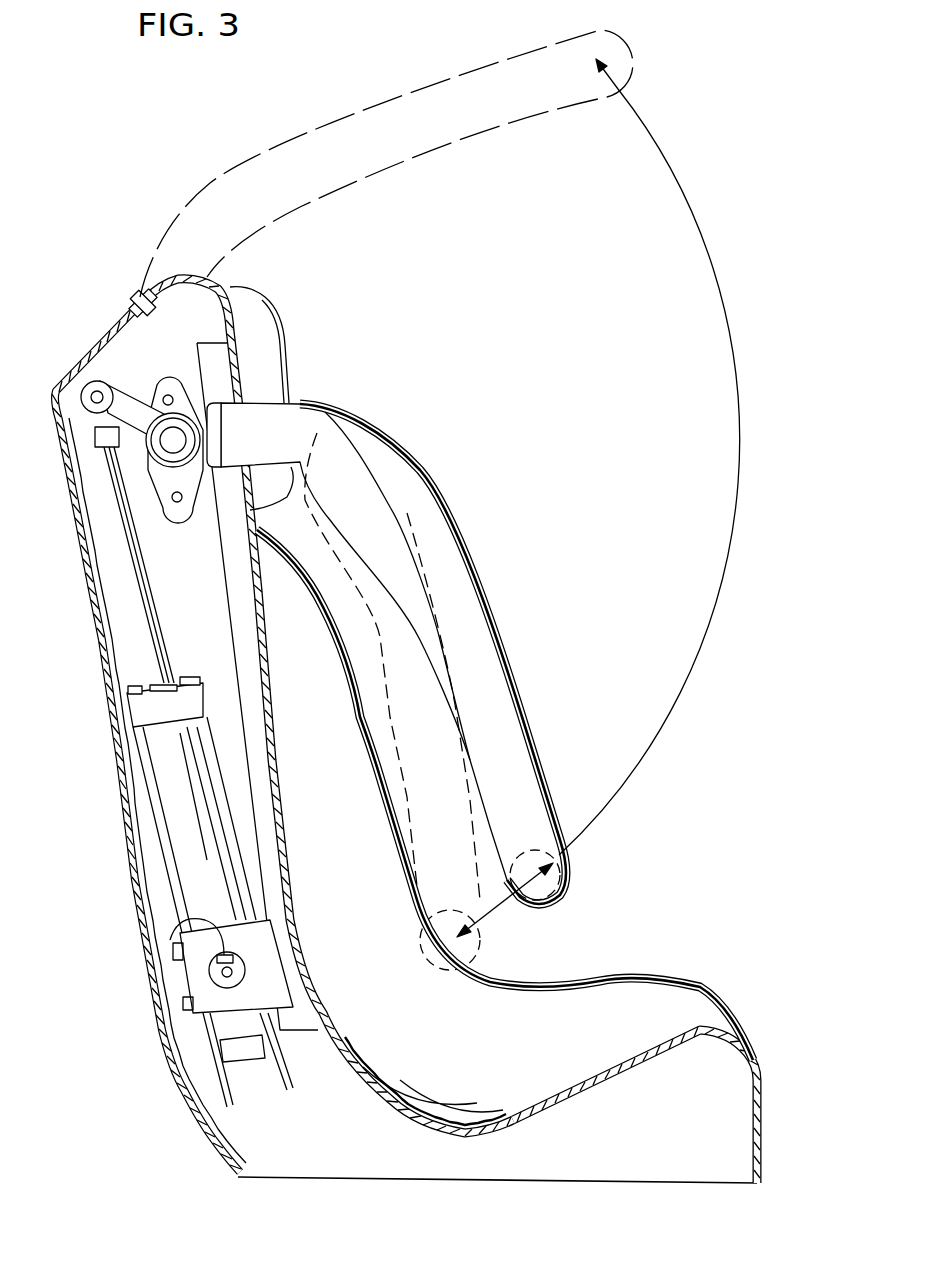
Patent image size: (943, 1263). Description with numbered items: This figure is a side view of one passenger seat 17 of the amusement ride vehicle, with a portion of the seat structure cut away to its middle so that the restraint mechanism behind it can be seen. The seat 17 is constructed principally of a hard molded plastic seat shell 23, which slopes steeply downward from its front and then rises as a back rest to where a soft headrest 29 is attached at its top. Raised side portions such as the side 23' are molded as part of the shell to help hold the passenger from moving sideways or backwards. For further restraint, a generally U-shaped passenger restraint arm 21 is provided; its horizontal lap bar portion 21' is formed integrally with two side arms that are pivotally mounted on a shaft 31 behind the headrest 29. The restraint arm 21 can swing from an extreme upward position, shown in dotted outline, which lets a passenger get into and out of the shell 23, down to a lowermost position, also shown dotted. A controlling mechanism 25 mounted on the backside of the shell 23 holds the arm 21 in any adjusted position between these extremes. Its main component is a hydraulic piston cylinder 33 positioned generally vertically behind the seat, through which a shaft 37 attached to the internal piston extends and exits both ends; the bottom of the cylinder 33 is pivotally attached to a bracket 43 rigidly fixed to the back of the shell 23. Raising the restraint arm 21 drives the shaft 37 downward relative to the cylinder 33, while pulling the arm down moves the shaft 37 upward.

The passenger seat 17 is at (768, 1054).
The passenger restraint arm 21 is at (440, 500).
The horizontal lap bar portion 21' is at (536, 901).
The seat shell 23 is at (636, 1105).
The raised side portion 23' is at (505, 795).
The controlling mechanism 25 is at (193, 596).
The soft headrest 29 is at (277, 330).
The shaft 31 is at (170, 443).
The piston cylinder 33 is at (173, 767).
The shaft 37 is at (127, 533).
The bracket 43 is at (197, 970).